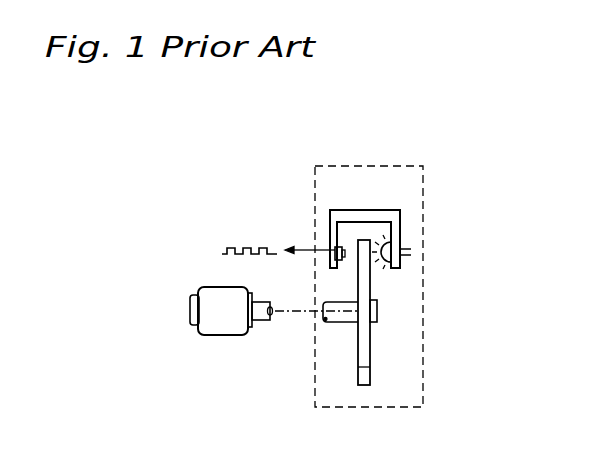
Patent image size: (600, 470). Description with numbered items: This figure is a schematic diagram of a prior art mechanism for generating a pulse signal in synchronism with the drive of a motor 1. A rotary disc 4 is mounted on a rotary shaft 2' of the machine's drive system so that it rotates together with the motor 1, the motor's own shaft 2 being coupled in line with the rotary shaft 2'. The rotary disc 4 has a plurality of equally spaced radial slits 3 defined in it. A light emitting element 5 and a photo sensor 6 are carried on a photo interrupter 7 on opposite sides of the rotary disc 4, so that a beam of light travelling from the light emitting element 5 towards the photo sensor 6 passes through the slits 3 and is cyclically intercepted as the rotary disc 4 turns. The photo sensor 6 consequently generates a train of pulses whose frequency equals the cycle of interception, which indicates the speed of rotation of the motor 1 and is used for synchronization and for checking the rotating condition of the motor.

The motor 1 is at (217, 298).
The motor shaft 2 is at (252, 350).
The rotary shaft 2' is at (317, 362).
The slits 3 is at (368, 377).
The rotary disc 4 is at (366, 278).
The light emitting element 5 is at (384, 251).
The photo sensor 6 is at (322, 246).
The photo interrupter 7 is at (365, 215).